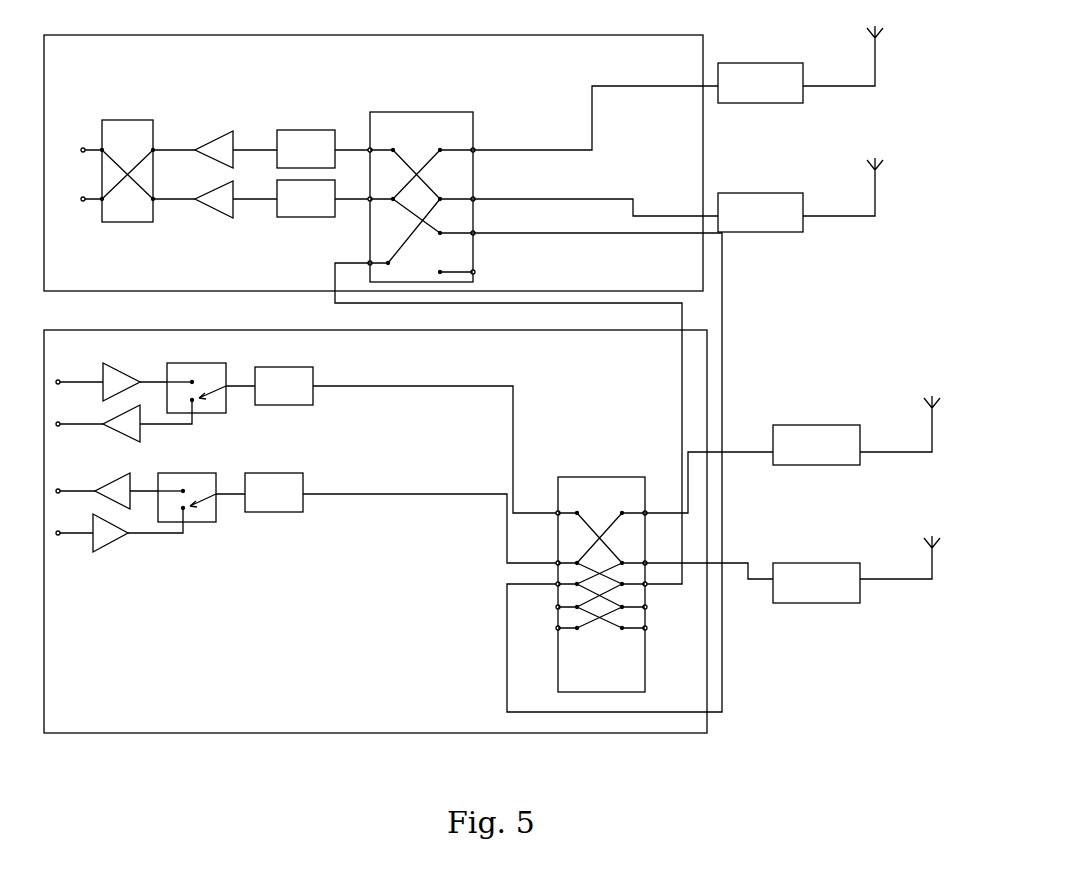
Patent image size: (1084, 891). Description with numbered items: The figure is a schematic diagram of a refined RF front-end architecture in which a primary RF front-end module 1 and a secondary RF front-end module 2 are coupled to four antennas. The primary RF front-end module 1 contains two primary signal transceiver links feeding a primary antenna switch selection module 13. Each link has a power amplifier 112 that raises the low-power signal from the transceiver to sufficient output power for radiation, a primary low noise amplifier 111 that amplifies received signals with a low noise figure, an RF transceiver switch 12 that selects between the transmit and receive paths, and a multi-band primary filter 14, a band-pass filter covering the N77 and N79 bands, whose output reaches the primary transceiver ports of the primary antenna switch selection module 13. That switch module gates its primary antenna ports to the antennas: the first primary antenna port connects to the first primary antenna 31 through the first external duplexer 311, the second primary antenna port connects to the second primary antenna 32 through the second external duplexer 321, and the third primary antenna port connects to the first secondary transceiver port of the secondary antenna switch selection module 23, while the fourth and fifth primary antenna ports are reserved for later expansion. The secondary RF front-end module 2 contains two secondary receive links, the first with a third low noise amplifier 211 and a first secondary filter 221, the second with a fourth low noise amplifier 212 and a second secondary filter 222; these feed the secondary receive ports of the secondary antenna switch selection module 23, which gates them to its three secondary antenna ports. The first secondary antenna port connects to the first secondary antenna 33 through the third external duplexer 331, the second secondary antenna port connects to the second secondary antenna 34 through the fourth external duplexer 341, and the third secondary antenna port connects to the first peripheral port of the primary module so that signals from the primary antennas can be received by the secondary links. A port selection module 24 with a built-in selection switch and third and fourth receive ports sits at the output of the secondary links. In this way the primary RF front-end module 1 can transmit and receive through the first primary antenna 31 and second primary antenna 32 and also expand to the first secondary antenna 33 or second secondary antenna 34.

The primary RF front-end module 1 is at (702, 405).
The secondary RF front-end module 2 is at (378, 35).
The RF transceiver switch 12 is at (228, 372).
The primary antenna switch selection module 13 is at (592, 584).
The multi-band primary filter 14 is at (313, 372).
The secondary antenna switch selection module 23 is at (470, 112).
The port selection module 24 is at (128, 120).
The first primary antenna 31 is at (936, 546).
The second primary antenna 32 is at (936, 406).
The first secondary antenna 33 is at (884, 162).
The second secondary antenna 34 is at (884, 30).
The primary low noise amplifier 111 is at (142, 428).
The power amplifier 112 is at (120, 364).
The third low noise amplifier 211 is at (213, 137).
The fourth low noise amplifier 212 is at (213, 187).
The first secondary filter 221 is at (335, 130).
The second secondary filter 222 is at (335, 180).
The first external duplexer 311 is at (835, 563).
The second external duplexer 321 is at (835, 425).
The third external duplexer 331 is at (775, 193).
The fourth external duplexer 341 is at (775, 63).